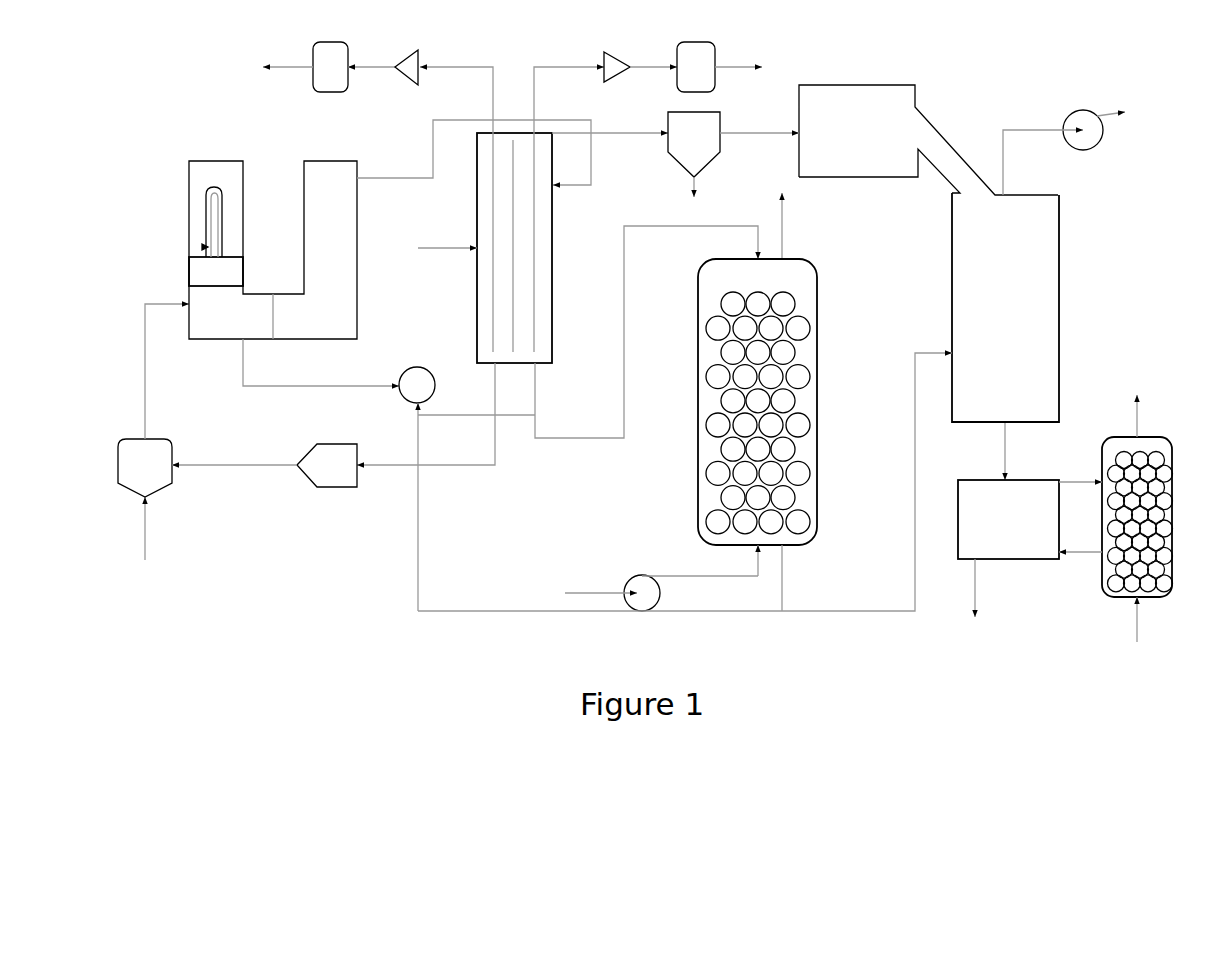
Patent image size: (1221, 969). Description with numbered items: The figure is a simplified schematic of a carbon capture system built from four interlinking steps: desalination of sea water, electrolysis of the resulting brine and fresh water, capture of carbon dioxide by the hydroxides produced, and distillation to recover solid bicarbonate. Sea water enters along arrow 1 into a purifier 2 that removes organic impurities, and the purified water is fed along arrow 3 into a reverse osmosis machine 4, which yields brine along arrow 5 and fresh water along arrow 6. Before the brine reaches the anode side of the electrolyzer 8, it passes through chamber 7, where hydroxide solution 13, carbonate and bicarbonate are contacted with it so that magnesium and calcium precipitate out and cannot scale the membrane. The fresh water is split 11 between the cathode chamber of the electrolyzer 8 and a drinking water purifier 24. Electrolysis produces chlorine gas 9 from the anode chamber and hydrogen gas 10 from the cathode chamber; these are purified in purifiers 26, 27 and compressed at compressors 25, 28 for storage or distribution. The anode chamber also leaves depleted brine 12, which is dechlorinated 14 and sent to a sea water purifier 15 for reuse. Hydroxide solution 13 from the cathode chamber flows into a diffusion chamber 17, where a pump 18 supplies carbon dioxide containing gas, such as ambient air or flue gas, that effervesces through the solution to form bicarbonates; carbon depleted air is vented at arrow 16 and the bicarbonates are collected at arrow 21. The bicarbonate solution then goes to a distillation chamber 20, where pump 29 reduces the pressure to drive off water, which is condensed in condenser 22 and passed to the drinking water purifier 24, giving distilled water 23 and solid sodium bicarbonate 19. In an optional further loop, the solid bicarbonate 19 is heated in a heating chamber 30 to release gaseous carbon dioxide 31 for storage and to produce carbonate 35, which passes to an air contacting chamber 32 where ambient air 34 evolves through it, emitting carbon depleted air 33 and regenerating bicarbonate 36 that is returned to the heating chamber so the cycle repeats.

The sea water inlet arrow 1 is at (128, 529).
The purifier 2 is at (134, 468).
The purified sea water feed arrow 3 is at (156, 371).
The reverse osmosis machine 4 is at (186, 244).
The brine stream arrow 5 is at (308, 362).
The fresh water stream arrow 6 is at (474, 152).
The chamber 7 is at (427, 489).
The electrolyzer 8 is at (485, 248).
The chlorine gas 9 is at (456, 196).
The hydrogen gas 10 is at (569, 198).
The fresh water split 11 is at (610, 149).
The depleted brine 12 is at (446, 429).
The hydroxide solution 13 is at (646, 332).
The dechlorinator 14 is at (327, 478).
The sea water purifier 15 is at (234, 479).
The carbon depleted air vent arrow 16 is at (802, 226).
The diffusion chamber 17 is at (775, 402).
The pump 18 is at (661, 578).
The solid sodium bicarbonate 19 is at (1020, 451).
The distillation chamber 20 is at (1022, 307).
The bicarbonate collection arrow 21 is at (685, 482).
The condenser 22 is at (928, 128).
The distilled water 23 is at (733, 143).
The drinking water purifier 24 is at (713, 186).
The compressor 25 is at (329, 56).
The purifier 26 is at (407, 52).
The purifier 27 is at (640, 55).
The compressor 28 is at (719, 58).
The pump 29 is at (1064, 140).
The heating chamber 30 is at (992, 519).
The gaseous carbon dioxide 31 is at (955, 588).
The air contacting chamber 32 is at (1152, 517).
The carbon depleted air 33 is at (1154, 416).
The ambient air 34 is at (1153, 619).
The carbonate 35 is at (1080, 471).
The bicarbonate 36 is at (1080, 565).